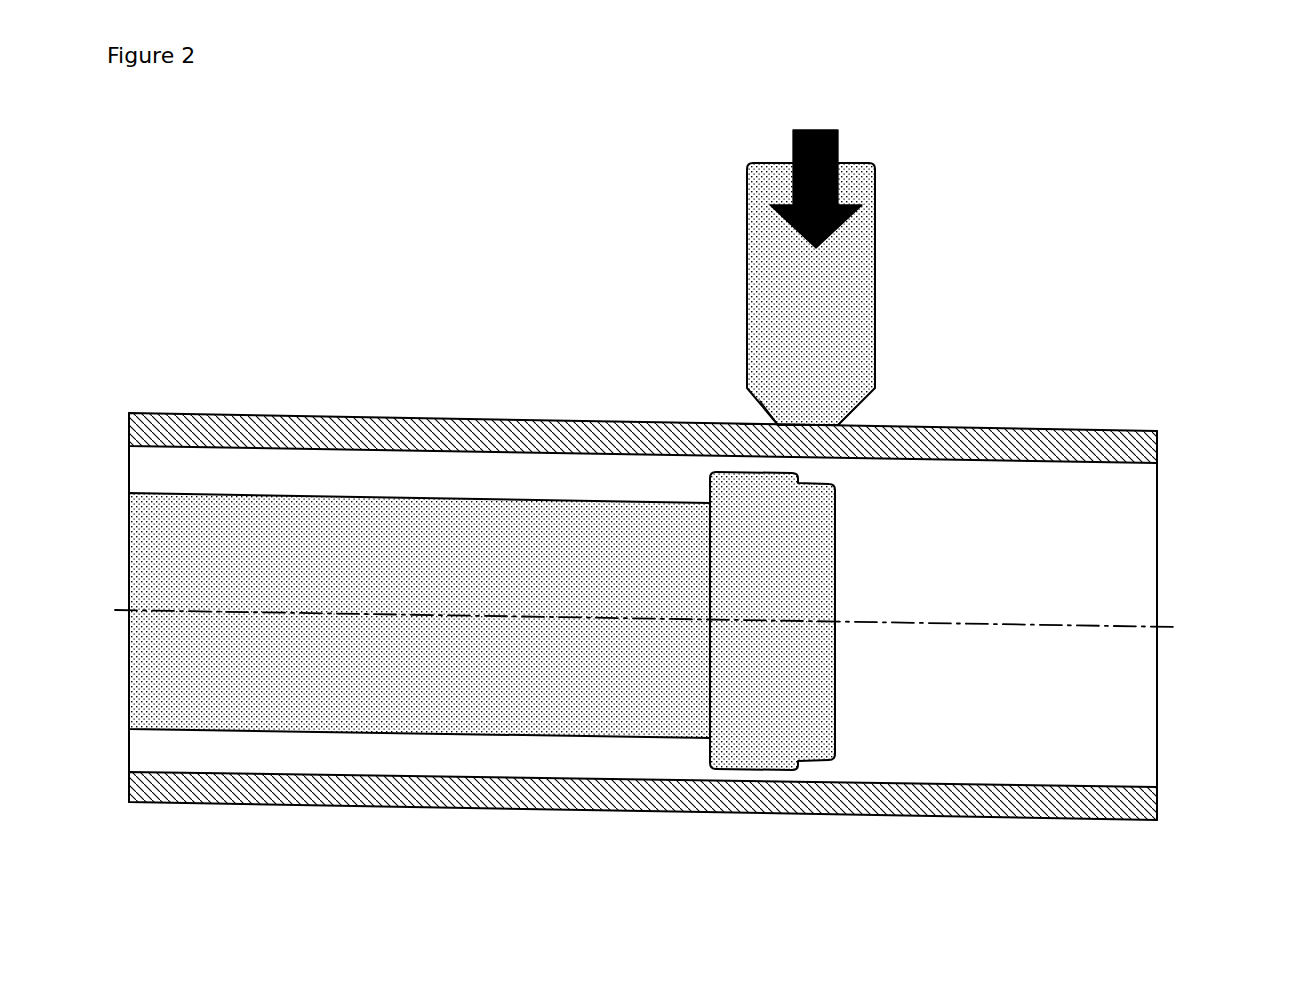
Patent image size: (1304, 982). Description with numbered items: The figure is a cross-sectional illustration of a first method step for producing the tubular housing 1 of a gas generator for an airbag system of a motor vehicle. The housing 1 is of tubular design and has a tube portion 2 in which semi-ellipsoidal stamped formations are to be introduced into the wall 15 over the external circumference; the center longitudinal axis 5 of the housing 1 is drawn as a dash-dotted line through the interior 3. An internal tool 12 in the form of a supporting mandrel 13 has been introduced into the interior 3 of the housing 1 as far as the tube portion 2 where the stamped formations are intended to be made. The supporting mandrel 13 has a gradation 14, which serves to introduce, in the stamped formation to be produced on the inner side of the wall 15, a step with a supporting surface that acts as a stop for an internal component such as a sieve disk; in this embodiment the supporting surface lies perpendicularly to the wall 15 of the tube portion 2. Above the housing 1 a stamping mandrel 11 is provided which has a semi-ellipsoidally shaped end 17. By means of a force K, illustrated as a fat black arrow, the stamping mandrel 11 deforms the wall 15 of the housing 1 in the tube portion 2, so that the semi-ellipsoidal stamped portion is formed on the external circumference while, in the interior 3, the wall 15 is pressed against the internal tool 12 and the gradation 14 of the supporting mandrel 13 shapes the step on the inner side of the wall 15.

The housing 1 is at (100, 222).
The tube portion 2 is at (917, 850).
The interior 3 is at (1105, 695).
The center longitudinal axis 5 is at (1092, 627).
The stamping mandrel 11 is at (876, 246).
The internal tool 12 is at (835, 567).
The supporting mandrel 13 is at (860, 711).
The gradation 14 is at (750, 423).
The wall 15 is at (366, 418).
The semi-ellipsoidally shaped end 17 is at (878, 410).
The force K is at (822, 128).